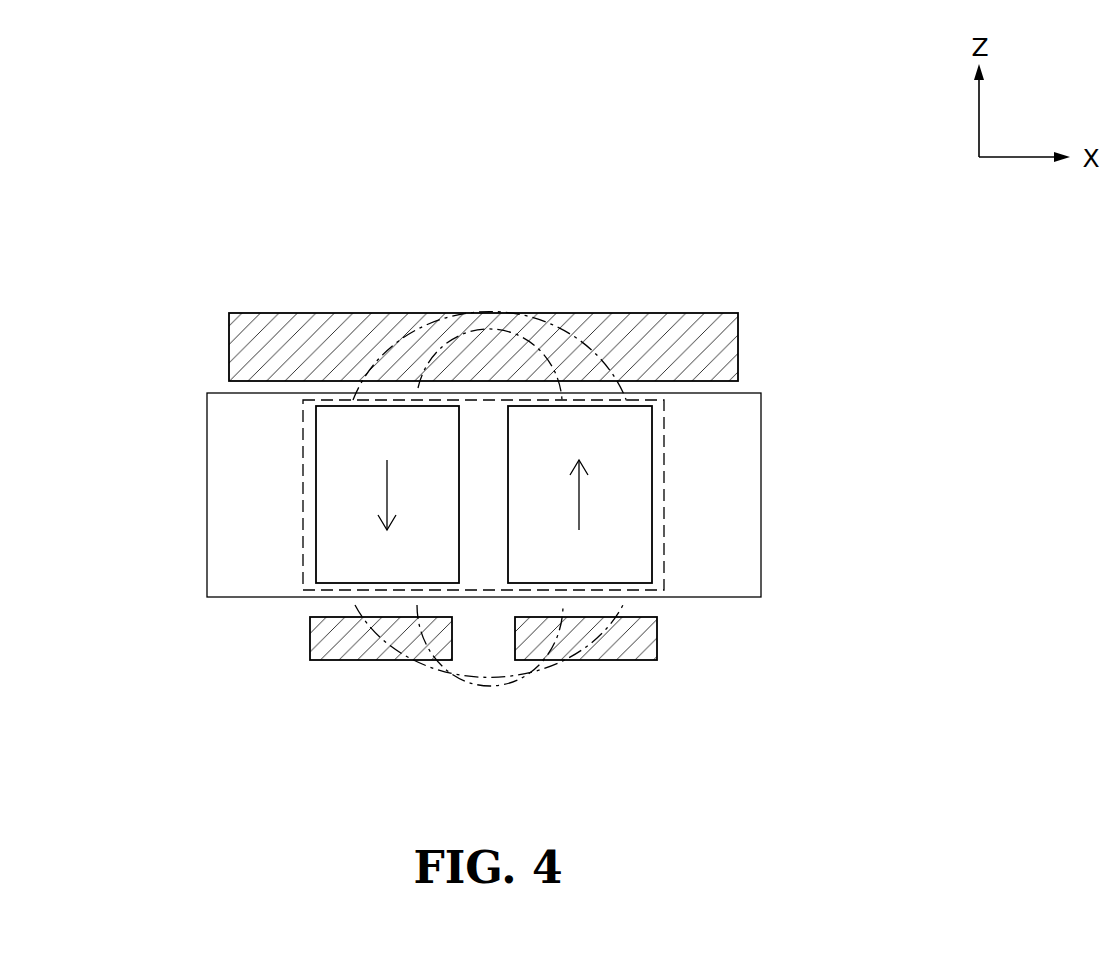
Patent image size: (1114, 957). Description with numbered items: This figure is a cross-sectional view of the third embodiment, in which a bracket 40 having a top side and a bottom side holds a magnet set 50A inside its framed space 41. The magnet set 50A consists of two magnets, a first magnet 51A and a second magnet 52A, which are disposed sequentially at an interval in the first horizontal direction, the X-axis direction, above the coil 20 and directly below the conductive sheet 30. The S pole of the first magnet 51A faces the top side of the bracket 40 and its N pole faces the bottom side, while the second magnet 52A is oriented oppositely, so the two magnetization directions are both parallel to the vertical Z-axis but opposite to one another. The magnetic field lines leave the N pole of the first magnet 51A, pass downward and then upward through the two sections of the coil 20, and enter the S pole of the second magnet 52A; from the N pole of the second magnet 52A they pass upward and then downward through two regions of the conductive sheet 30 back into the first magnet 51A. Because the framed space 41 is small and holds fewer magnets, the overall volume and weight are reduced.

The coil 20 is at (650, 643).
The conductive sheet 30 is at (708, 323).
The bracket 40 is at (238, 424).
The framed space 41 is at (656, 437).
The magnet set 50A is at (323, 196).
The first magnet 51A is at (351, 443).
The second magnet 52A is at (617, 445).